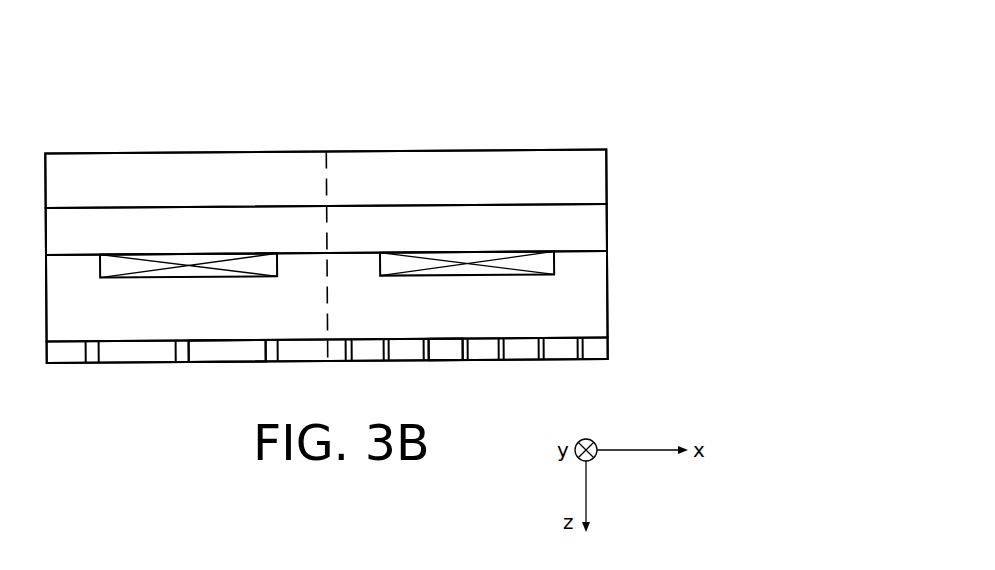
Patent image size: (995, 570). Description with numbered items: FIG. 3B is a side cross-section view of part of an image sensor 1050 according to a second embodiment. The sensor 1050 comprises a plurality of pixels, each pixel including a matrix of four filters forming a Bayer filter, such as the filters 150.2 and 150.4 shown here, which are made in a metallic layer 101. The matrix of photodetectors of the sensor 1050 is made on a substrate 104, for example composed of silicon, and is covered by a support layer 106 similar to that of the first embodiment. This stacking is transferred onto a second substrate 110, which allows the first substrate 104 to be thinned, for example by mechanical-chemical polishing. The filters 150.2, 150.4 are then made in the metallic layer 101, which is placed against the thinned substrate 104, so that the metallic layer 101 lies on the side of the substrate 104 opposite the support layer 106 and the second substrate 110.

The image sensor 1050 is at (614, 126).
The second substrate 110 is at (585, 178).
The support layer 106 is at (587, 232).
The substrate 104 is at (587, 312).
The metallic layer 101 is at (587, 349).
The filter 150.2 is at (222, 353).
The filter 150.4 is at (443, 350).